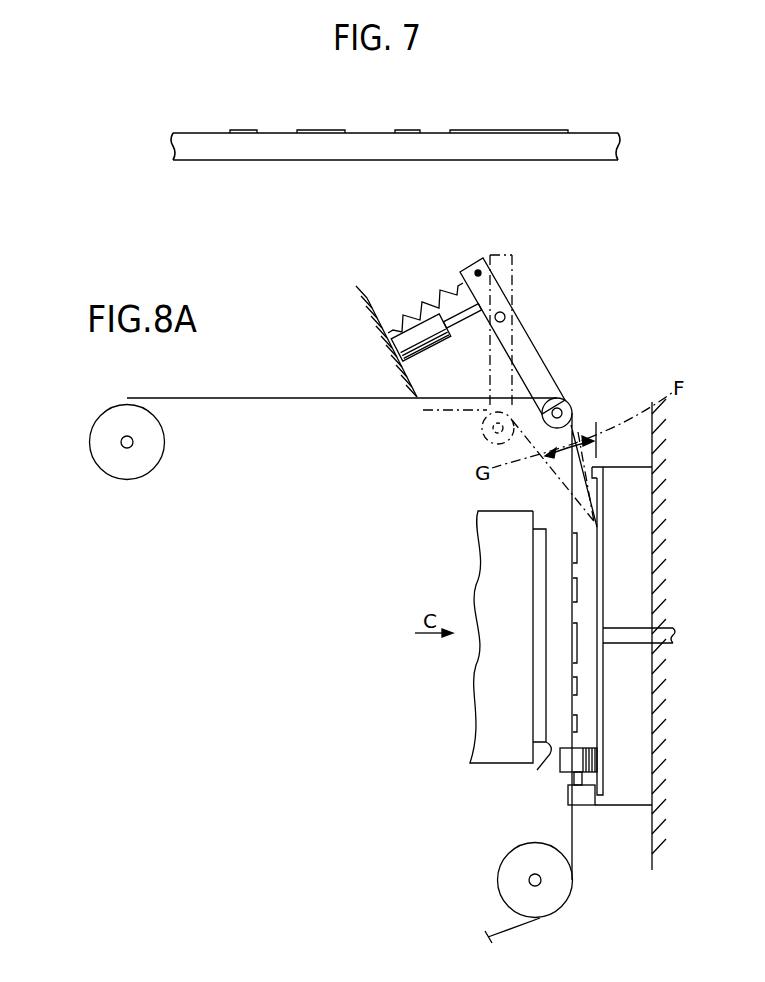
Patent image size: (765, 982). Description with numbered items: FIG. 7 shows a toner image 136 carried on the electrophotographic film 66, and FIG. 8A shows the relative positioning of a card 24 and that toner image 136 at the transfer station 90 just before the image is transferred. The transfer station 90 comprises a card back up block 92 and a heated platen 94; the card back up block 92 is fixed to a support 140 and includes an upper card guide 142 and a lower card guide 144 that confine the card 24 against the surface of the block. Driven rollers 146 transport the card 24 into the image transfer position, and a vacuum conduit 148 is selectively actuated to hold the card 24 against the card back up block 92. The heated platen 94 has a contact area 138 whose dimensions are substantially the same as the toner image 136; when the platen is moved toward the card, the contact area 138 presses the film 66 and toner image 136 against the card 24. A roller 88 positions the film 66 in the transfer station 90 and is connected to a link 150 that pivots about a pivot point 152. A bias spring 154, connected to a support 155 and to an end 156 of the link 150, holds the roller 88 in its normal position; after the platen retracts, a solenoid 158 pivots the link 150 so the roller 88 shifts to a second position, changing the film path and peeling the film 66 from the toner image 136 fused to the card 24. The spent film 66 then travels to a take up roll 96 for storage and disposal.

In FIG. 8A, the card 24 is at (600, 547).
In FIG. 7, the electrophotographic film 66 is at (600, 145).
In FIG. 8A, the electrophotographic film 66 is at (572, 517).
In FIG. 8A, the roller 88 is at (570, 404).
In FIG. 8A, the transfer station 90 is at (452, 724).
In FIG. 8A, the card back up block 92 is at (640, 585).
In FIG. 8A, the heated platen 94 is at (488, 757).
In FIG. 8A, the take up roll 96 is at (135, 468).
In FIG. 7, the toner image 136 is at (513, 128).
In FIG. 8A, the toner image 136 is at (578, 725).
In FIG. 8A, the contact area 138 is at (529, 662).
In FIG. 8A, the support 140 is at (699, 459).
In FIG. 8A, the upper card guide 142 is at (600, 466).
In FIG. 8A, the lower card guide 144 is at (603, 806).
In FIG. 8A, the driven rollers 146 is at (561, 762).
In FIG. 8A, the vacuum conduit 148 is at (660, 636).
In FIG. 8A, the link 150 is at (533, 363).
In FIG. 8A, the pivot point 152 is at (505, 315).
In FIG. 8A, the bias spring 154 is at (413, 297).
In FIG. 8A, the support 155 is at (360, 344).
In FIG. 8A, the end of the link 156 is at (483, 263).
In FIG. 8A, the solenoid 158 is at (423, 350).